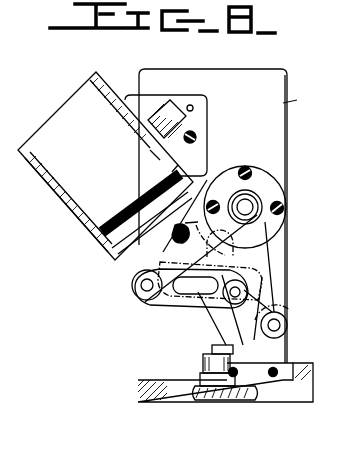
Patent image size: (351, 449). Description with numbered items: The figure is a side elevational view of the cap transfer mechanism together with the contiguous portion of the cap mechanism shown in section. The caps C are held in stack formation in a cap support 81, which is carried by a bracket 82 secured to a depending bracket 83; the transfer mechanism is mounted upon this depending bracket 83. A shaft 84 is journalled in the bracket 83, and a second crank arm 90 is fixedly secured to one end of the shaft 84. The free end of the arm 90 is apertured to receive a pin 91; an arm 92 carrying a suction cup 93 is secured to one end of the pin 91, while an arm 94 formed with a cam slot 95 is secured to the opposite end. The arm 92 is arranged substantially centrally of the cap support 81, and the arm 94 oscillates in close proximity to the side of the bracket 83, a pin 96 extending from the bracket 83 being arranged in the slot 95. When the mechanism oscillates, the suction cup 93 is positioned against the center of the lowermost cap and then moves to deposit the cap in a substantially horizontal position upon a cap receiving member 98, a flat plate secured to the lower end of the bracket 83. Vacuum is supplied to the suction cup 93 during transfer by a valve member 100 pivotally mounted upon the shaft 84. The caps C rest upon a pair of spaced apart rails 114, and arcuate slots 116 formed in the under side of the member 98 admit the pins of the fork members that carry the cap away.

The cap support 81 is at (40, 182).
The bracket 82 is at (150, 102).
The depending bracket 83 is at (283, 103).
The shaft 84 is at (247, 200).
The second crank arm 90 is at (239, 243).
The pin 91 is at (137, 300).
The arm 92 is at (140, 279).
The suction cup 93 is at (175, 218).
The arm 94 is at (176, 300).
The cam slot 95 is at (203, 312).
The pin 96 is at (255, 291).
The cap receiving member 98 is at (138, 389).
The valve member 100 is at (198, 222).
The rails 114 is at (247, 402).
The arcuate slots 116 is at (193, 402).
The cap C is at (121, 211).